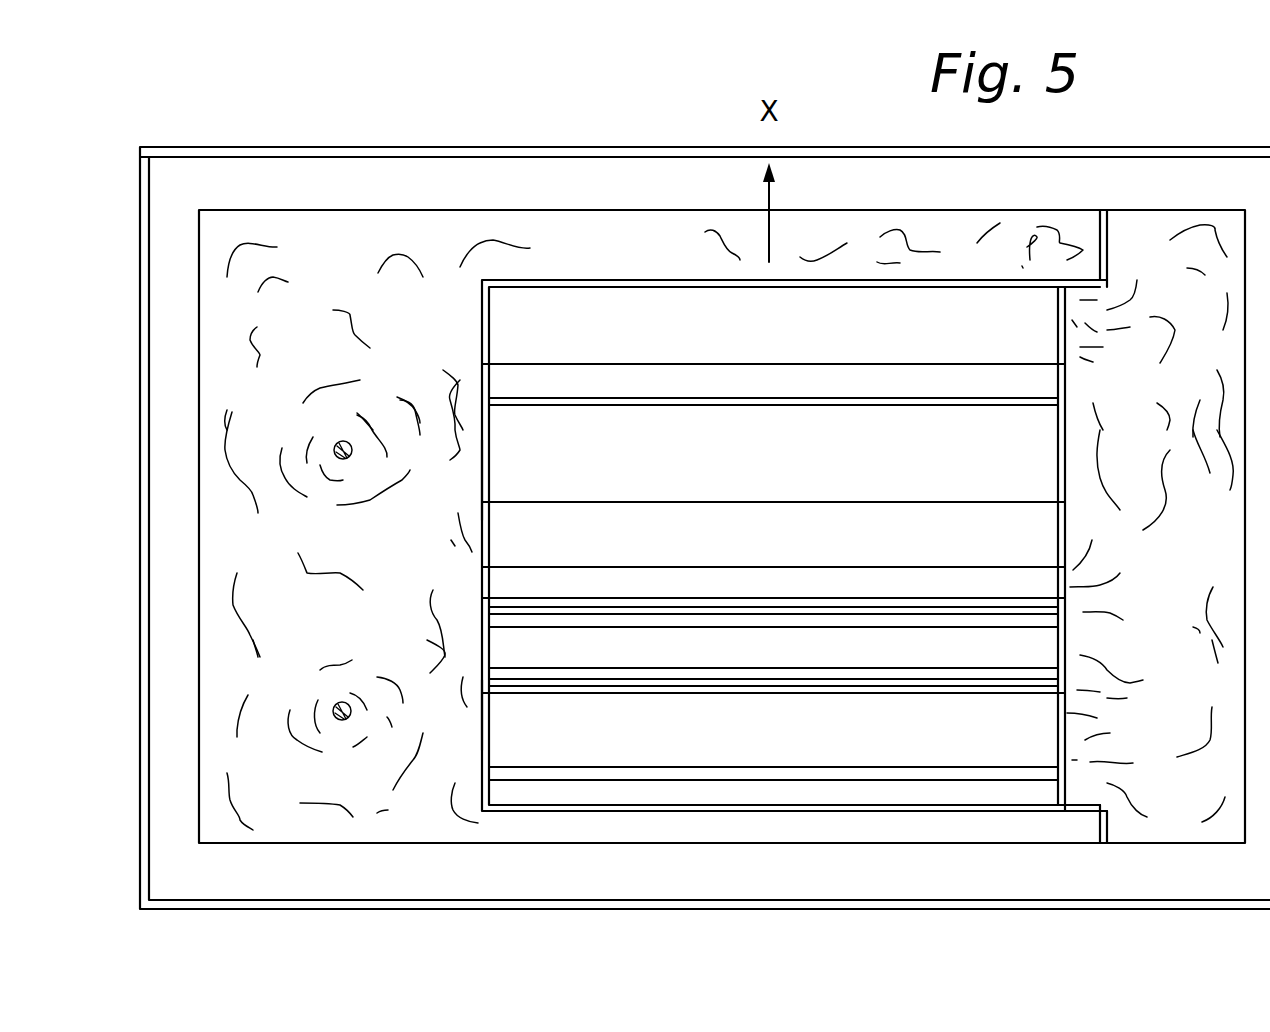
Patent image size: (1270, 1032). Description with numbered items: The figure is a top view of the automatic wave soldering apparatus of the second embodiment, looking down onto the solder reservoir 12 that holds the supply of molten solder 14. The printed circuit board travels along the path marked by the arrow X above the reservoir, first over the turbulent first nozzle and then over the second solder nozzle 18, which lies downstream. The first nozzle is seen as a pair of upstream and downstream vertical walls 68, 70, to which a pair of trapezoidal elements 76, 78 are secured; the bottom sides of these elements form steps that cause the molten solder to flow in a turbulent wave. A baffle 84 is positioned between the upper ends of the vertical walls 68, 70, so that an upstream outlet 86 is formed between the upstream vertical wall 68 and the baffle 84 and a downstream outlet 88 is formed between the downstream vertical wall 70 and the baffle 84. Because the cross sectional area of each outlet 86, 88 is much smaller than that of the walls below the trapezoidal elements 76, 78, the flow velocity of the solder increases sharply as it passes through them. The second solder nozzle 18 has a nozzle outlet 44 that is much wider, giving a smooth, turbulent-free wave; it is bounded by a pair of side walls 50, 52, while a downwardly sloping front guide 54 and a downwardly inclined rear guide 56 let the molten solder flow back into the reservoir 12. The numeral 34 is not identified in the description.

The solder reservoir 12 is at (1151, 210).
The molten solder 14 is at (1180, 600).
The second solder nozzle 18 is at (655, 424).
The lower hinge fastener 34 is at (481, 715).
The nozzle outlet 44 is at (808, 431).
The side wall 50 is at (481, 477).
The side wall 52 is at (1067, 487).
The front guide 54 is at (968, 514).
The rear guide 56 is at (952, 381).
The upstream vertical wall 68 is at (600, 693).
The downstream vertical wall 70 is at (930, 604).
The trapezoidal element 76 is at (650, 685).
The trapezoidal element 78 is at (878, 614).
The baffle 84 is at (757, 647).
The upstream outlet 86 is at (708, 670).
The downstream outlet 88 is at (827, 624).